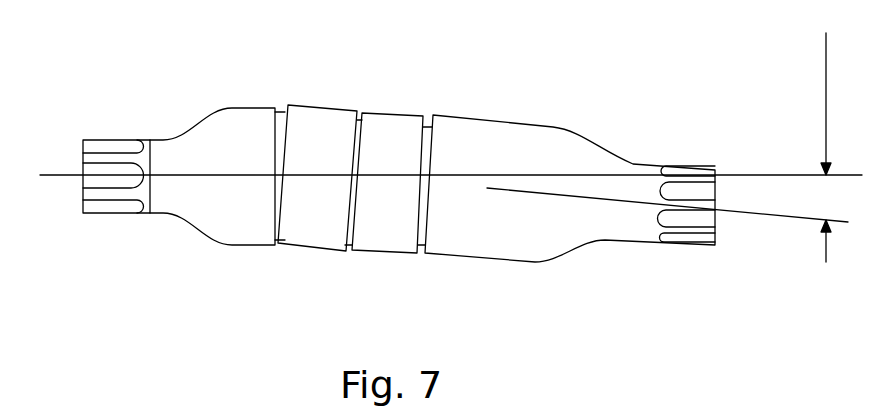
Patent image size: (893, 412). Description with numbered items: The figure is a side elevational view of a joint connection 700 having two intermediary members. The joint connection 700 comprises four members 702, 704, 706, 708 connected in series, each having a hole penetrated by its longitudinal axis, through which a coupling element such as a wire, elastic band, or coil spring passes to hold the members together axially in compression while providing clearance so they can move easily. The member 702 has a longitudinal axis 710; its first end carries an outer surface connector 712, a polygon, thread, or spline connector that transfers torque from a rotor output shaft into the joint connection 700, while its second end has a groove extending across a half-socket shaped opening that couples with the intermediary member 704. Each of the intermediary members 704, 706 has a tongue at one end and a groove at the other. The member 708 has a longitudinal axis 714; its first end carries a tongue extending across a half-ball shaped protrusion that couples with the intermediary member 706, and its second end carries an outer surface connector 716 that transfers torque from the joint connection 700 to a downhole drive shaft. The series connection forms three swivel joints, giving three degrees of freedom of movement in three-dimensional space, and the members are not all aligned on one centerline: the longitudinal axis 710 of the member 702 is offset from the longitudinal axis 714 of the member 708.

The joint connection 700 is at (602, 69).
The member 702 is at (230, 128).
The intermediary member 704 is at (330, 128).
The intermediary member 706 is at (395, 128).
The member 708 is at (491, 133).
The longitudinal axis 710 is at (190, 176).
The outer surface connector 712 is at (115, 207).
The longitudinal axis 714 is at (568, 198).
The outer surface connector 716 is at (677, 217).